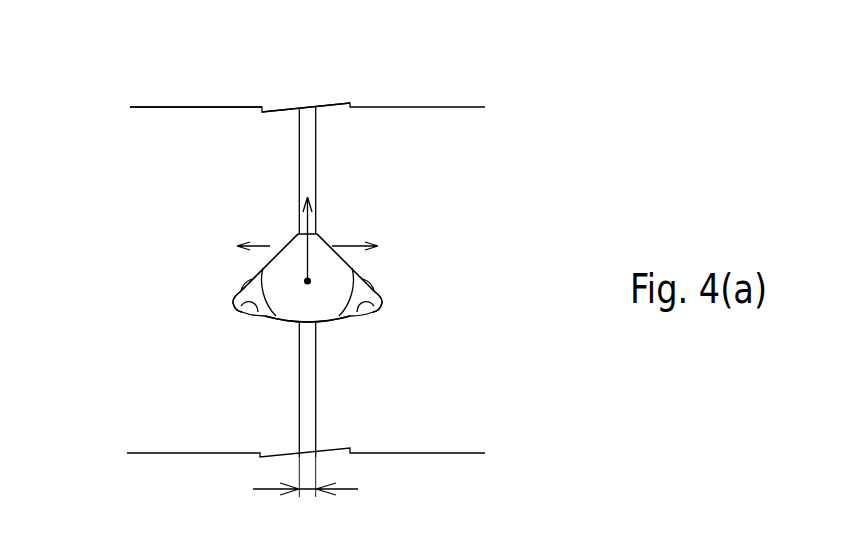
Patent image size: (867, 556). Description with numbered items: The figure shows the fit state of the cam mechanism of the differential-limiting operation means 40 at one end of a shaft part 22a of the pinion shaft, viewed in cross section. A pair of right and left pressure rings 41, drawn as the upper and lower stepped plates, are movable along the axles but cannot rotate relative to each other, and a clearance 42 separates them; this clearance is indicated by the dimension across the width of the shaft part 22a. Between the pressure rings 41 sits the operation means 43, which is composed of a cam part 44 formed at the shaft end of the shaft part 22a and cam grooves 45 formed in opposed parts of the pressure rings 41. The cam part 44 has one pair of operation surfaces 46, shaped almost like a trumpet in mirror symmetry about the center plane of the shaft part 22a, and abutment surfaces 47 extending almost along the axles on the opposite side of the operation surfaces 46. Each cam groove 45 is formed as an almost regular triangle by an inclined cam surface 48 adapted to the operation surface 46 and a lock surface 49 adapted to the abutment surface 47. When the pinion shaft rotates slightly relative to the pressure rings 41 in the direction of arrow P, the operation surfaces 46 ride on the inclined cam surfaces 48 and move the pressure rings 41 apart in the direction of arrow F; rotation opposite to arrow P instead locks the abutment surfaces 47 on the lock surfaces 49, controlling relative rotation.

The differential-limiting operation means 40 is at (441, 394).
The pressure rings 41 is at (218, 118).
The clearance 42 is at (305, 490).
The operation means 43 is at (509, 78).
The cam parts 44 is at (282, 317).
The cam grooves 45 is at (93, 272).
The operation surfaces 46 is at (258, 266).
The abutment surfaces 47 is at (288, 322).
The inclined cam surface 48 is at (243, 293).
The lock surface 49 is at (250, 310).
The shaft parts 22a is at (340, 310).
The arrow P is at (309, 257).
The arrow F is at (270, 242).